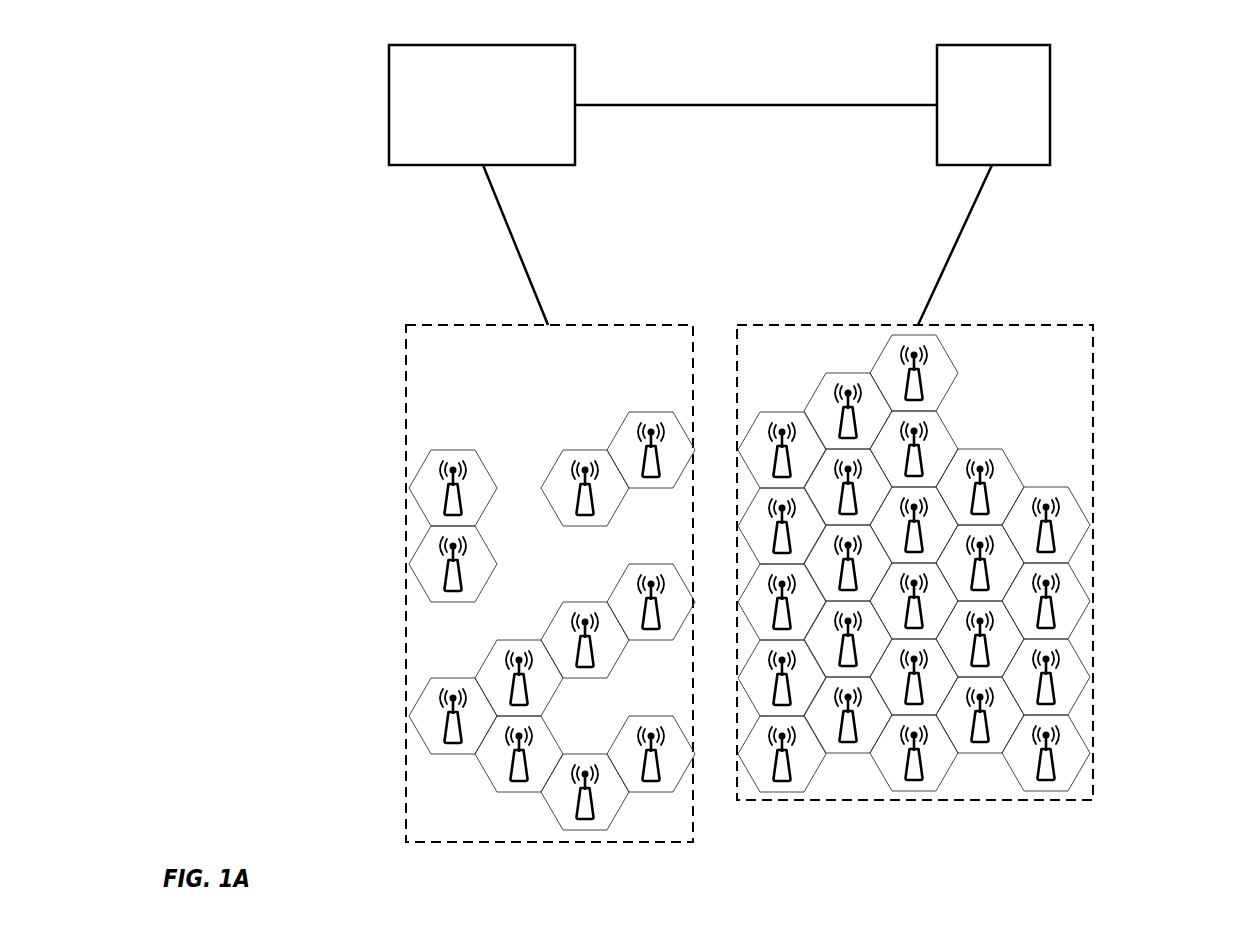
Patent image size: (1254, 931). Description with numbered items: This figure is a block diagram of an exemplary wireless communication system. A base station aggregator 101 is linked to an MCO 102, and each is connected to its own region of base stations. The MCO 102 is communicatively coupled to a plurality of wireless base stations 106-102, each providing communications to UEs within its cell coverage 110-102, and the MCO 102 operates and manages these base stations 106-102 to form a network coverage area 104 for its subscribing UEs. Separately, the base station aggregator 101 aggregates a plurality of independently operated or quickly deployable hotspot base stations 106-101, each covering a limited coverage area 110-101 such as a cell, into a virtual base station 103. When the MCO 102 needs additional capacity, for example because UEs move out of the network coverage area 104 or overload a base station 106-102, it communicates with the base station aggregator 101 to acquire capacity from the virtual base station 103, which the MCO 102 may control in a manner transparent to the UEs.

The base station aggregator 101 is at (463, 141).
The MCO 102 is at (974, 128).
The virtual base station 103 is at (406, 413).
The network coverage area 104 is at (1093, 390).
The wireless base stations 106-101 is at (590, 458).
The wireless base stations 106-102 is at (987, 498).
The coverage area 110-101 is at (423, 742).
The cell coverages 110-102 is at (982, 753).